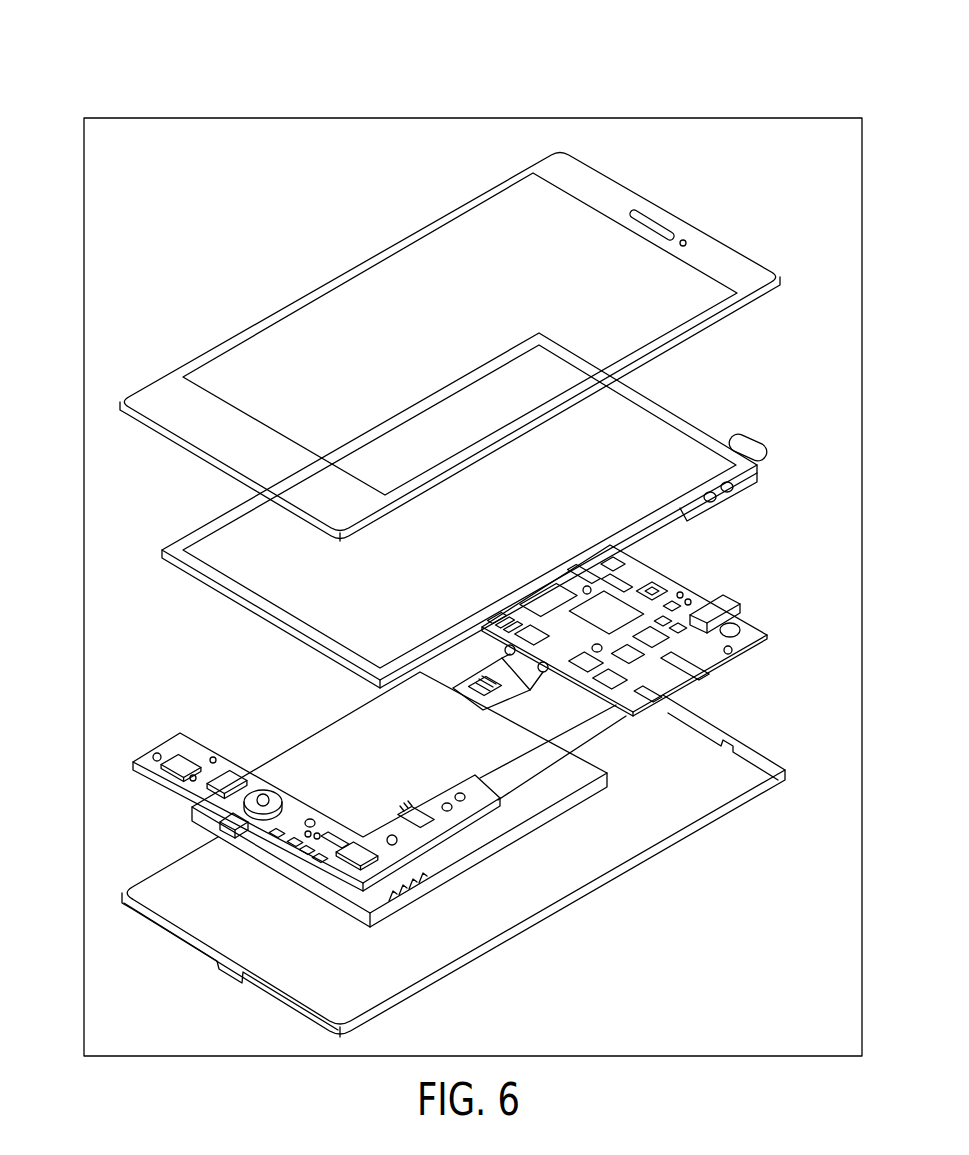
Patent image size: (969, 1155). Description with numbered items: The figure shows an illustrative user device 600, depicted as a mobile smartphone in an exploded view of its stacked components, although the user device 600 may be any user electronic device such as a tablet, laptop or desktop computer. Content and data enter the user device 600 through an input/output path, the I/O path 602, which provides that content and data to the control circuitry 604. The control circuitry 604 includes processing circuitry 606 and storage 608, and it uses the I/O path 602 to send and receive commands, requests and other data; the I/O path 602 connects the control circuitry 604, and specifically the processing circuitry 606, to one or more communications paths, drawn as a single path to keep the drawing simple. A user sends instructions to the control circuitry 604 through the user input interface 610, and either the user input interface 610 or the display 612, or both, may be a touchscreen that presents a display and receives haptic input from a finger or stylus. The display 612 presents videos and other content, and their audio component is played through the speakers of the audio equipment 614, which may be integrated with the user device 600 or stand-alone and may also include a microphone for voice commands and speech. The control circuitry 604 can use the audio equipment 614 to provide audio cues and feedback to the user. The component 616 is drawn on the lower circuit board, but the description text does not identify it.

The user device 600 is at (388, 84).
The I/O path 602 is at (230, 808).
The control circuitry 604 is at (650, 630).
The processing circuitry 606 is at (677, 654).
The storage 608 is at (618, 609).
The user input interface 610 is at (600, 431).
The display 612 is at (740, 466).
The audio equipment 614 is at (672, 231).
The electronic component 616 is at (320, 875).